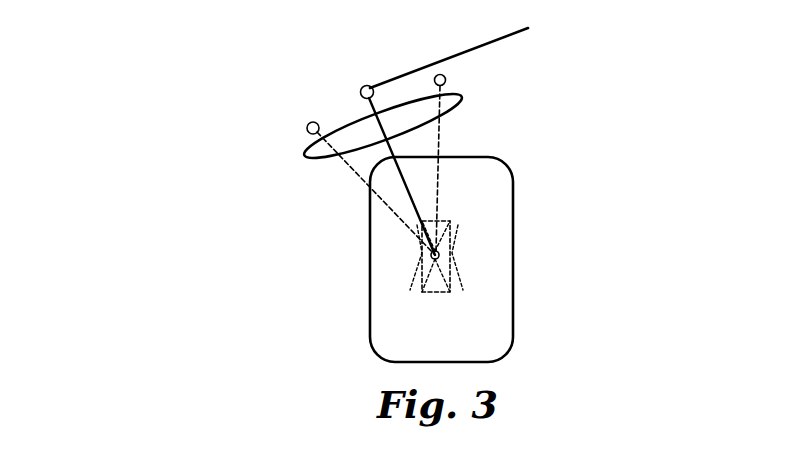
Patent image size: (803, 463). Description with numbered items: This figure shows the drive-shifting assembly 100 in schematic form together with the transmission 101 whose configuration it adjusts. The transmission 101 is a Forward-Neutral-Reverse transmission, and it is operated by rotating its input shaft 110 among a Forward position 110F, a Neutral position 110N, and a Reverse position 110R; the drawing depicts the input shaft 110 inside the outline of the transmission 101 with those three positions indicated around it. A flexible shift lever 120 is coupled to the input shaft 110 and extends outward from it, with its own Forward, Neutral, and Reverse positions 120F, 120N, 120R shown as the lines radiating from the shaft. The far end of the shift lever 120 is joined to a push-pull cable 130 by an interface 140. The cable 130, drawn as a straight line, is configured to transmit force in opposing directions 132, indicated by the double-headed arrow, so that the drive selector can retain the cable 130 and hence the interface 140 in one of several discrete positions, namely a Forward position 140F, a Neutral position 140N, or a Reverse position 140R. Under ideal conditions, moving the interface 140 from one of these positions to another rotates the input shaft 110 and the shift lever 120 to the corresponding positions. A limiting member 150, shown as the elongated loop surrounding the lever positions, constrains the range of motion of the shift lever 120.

The drive-shifting assembly 100 is at (128, 69).
The transmission 101 is at (342, 287).
The input shaft 110 is at (476, 263).
The Reverse position of input shaft 110R is at (417, 285).
The Neutral position of input shaft 110N is at (433, 293).
The Forward position of input shaft 110F is at (460, 290).
The flexible shift lever 120 is at (244, 184).
The Neutral position of shift lever 120N is at (412, 193).
The Reverse position of shift lever 120R is at (443, 122).
The Forward position of shift lever 120F is at (367, 180).
The push-pull cable 130 is at (403, 76).
The opposing directions 132 is at (483, 28).
The interface 140 is at (236, 66).
The Neutral position of interface 140N is at (361, 88).
The Reverse position of interface 140R is at (446, 78).
The Forward position of interface 140F is at (307, 126).
The limiting member 150 is at (463, 98).